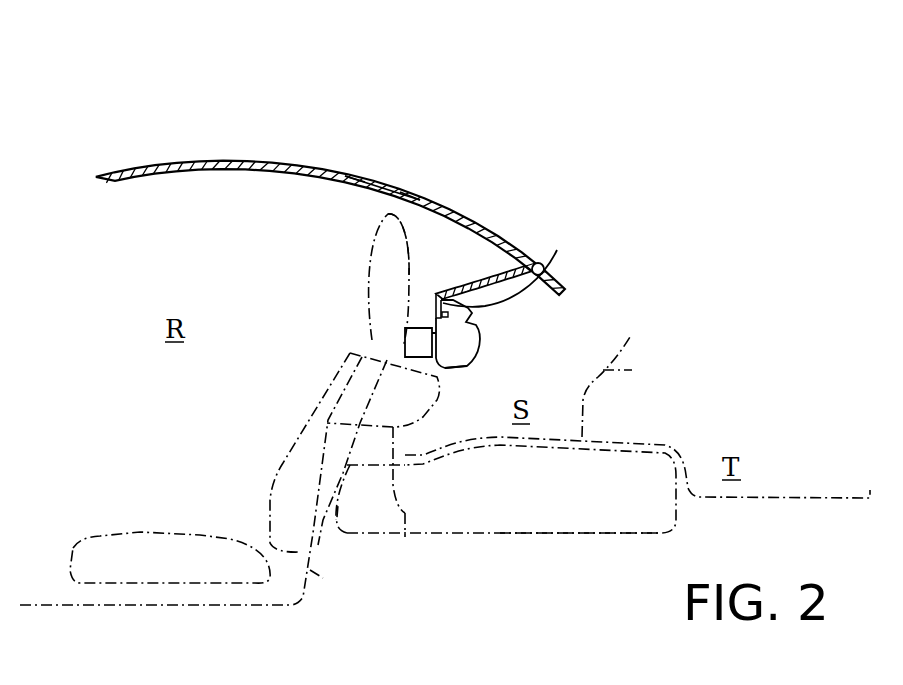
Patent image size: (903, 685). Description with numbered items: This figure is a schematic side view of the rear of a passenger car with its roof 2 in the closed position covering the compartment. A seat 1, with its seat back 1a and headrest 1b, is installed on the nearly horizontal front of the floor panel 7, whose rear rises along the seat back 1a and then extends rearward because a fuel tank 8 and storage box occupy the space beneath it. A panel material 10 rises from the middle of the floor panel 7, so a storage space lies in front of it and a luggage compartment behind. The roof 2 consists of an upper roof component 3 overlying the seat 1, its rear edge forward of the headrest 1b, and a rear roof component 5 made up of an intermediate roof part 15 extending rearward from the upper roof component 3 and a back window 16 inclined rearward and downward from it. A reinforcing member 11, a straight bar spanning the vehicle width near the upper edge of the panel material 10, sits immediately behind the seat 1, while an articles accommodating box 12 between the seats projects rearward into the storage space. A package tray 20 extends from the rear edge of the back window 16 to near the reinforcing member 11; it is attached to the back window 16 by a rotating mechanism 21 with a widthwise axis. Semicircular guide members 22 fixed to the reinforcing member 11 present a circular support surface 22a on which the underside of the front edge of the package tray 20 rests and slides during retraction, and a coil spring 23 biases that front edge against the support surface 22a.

The seat 1 is at (378, 242).
The seat back 1a is at (293, 450).
The headrest 1b is at (372, 262).
The roof 2 is at (344, 90).
The upper roof component 3 is at (188, 162).
The rear roof component 5 is at (463, 100).
The floor panel 7 is at (323, 578).
The fuel tank 8 is at (572, 536).
The panel material 10 is at (643, 377).
The reinforcing member 11 is at (405, 345).
The articles accommodating box 12 is at (405, 537).
The intermediate roof part 15 is at (350, 174).
The back window 16 is at (412, 192).
The package tray 20 is at (466, 278).
The rotating mechanism 21 is at (545, 266).
The guide member 22 is at (478, 321).
The support surface 22a is at (480, 351).
The coil spring 23 is at (524, 262).